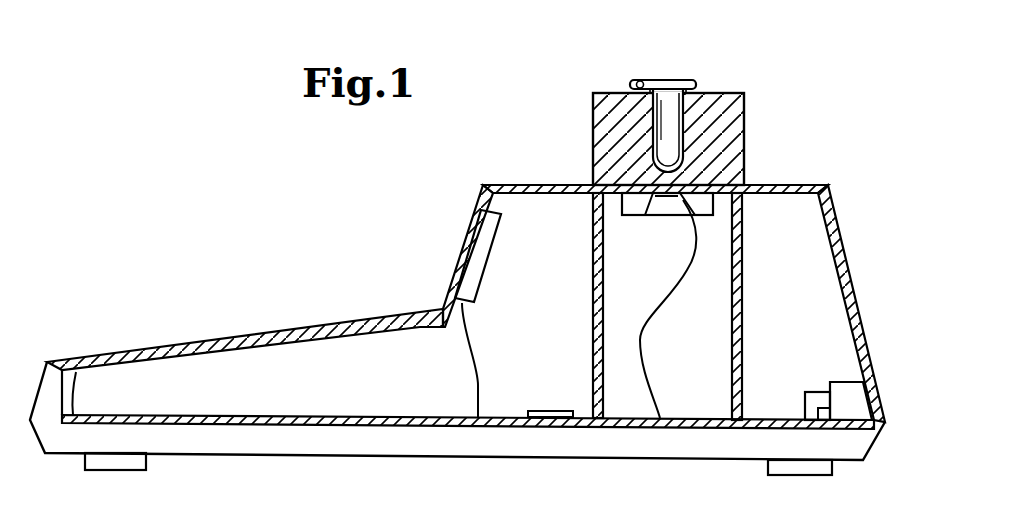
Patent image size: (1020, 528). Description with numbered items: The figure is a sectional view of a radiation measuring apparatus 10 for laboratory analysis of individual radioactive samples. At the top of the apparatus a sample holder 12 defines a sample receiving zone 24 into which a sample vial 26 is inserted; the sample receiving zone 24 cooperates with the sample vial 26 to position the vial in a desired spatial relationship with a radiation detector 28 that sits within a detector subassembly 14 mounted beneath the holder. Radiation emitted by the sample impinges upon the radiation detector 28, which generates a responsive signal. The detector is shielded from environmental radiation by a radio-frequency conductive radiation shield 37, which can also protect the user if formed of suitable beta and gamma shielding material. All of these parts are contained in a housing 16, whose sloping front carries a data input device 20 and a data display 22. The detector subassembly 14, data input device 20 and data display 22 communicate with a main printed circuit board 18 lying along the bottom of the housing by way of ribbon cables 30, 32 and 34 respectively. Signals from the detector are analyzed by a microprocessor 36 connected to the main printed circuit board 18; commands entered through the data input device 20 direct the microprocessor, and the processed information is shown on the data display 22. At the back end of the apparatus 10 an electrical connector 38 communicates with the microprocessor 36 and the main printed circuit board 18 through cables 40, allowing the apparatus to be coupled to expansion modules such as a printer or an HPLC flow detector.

The radiation measuring apparatus 10 is at (468, 172).
The sample holder 12 is at (757, 100).
The detector subassembly 14 is at (720, 205).
The housing 16 is at (858, 281).
The main printed circuit board 18 is at (311, 430).
The data input device 20 is at (285, 328).
The data display 22 is at (491, 257).
The sample receiving zone 24 is at (683, 167).
The sample vial 26 is at (663, 84).
The radiation detector 28 is at (655, 198).
The ribbon cable 30 is at (640, 340).
The ribbon cable 32 is at (476, 360).
The ribbon cable 34 is at (78, 395).
The microprocessor 36 is at (554, 411).
The radio-frequency conductive radiation shield 37 is at (742, 332).
The electrical connector 38 is at (853, 393).
The cables 40 is at (805, 395).